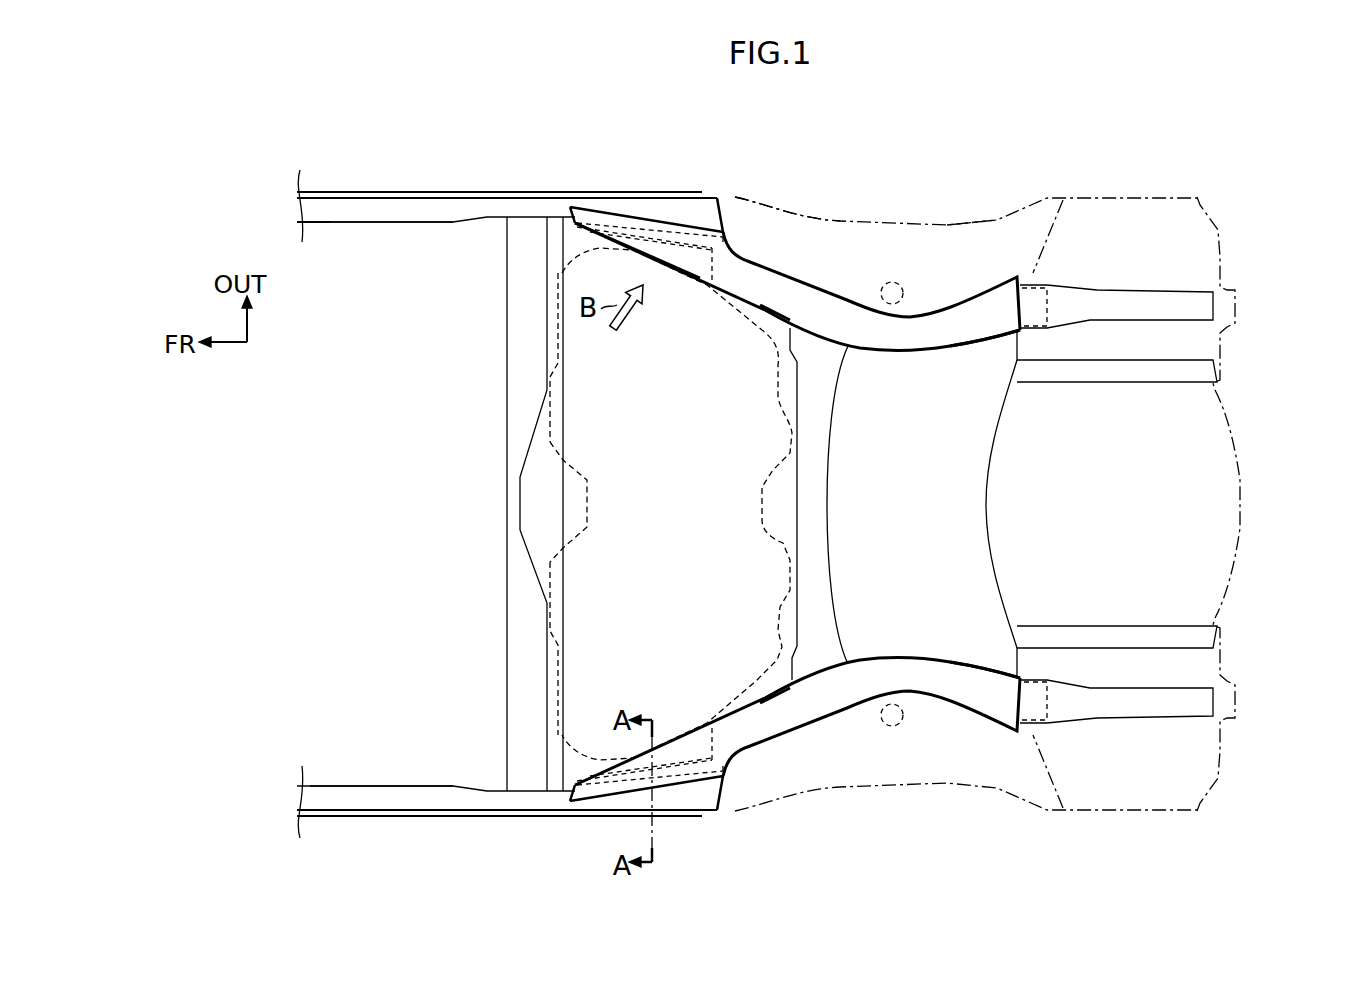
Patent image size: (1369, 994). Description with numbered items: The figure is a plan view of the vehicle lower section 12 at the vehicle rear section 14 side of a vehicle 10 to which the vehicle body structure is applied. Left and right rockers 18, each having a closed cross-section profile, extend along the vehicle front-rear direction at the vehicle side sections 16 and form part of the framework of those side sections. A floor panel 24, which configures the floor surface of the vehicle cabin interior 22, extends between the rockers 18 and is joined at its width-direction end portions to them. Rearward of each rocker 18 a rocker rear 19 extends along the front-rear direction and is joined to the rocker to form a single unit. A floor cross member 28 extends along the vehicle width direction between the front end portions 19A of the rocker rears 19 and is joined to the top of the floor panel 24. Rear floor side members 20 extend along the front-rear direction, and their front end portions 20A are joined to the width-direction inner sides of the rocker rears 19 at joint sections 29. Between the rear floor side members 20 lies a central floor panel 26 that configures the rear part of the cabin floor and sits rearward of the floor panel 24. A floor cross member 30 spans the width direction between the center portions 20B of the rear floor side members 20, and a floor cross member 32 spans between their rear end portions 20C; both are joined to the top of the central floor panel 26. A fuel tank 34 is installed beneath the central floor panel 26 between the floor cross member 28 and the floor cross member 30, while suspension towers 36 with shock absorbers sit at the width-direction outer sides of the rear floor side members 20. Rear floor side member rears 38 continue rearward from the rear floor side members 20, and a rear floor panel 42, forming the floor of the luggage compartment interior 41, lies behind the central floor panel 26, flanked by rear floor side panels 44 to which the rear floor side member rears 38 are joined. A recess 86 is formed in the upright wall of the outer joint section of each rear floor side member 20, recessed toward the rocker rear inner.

The vehicle 10 is at (961, 134).
The vehicle lower section 12 is at (763, 175).
The vehicle rear section 14 is at (878, 204).
The vehicle side section 16 is at (507, 522).
The rocker 18 is at (396, 205).
The front end portion of rocker rear 19A is at (602, 198).
The rocker rear 19 is at (593, 497).
The rear floor side member 20 is at (797, 503).
The front end portion of rear floor side member 20A is at (705, 263).
The front-rear direction center portion of rear floor side member 20B is at (795, 318).
The rear end portion of rear floor side member 20C is at (1003, 310).
The vehicle cabin interior 22 is at (332, 437).
The floor panel 24 is at (323, 267).
The central floor panel 26 is at (653, 267).
The floor cross member 28 is at (515, 577).
The joint section 29 is at (695, 210).
The floor cross member 30 is at (805, 523).
The floor cross member 32 is at (963, 523).
The fuel tank 34 is at (602, 430).
The suspension tower 36 is at (963, 257).
The rear floor side member rear 38 is at (1132, 300).
The luggage compartment interior 41 is at (1097, 510).
The rear floor panel 42 is at (1197, 490).
The rear floor side panel 44 is at (1187, 277).
The recess 86 is at (693, 252).